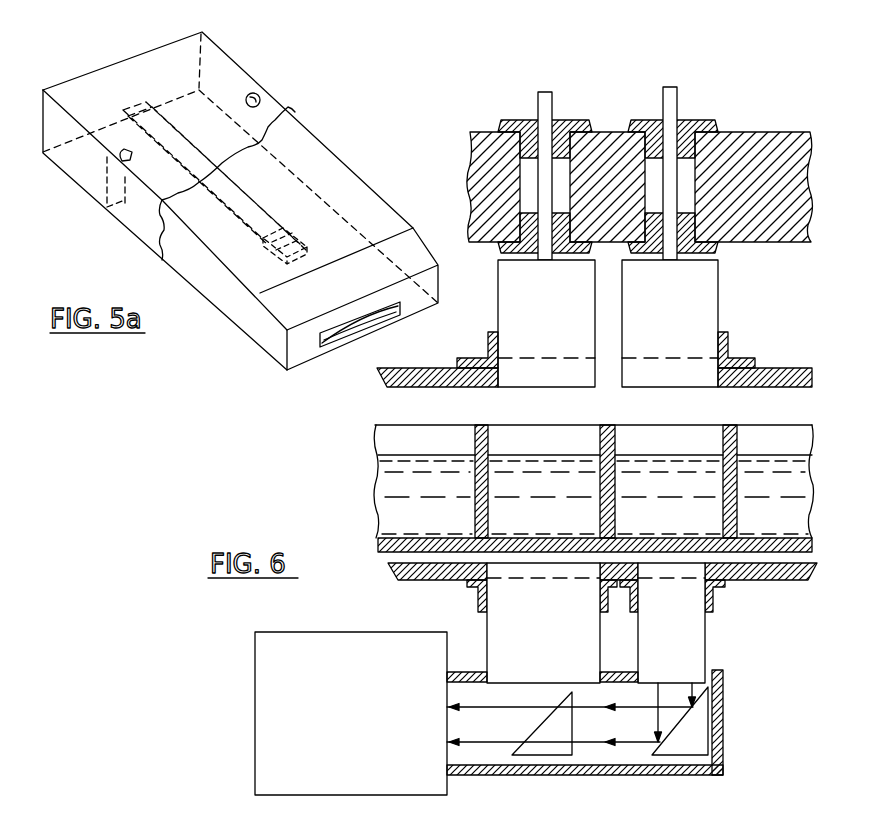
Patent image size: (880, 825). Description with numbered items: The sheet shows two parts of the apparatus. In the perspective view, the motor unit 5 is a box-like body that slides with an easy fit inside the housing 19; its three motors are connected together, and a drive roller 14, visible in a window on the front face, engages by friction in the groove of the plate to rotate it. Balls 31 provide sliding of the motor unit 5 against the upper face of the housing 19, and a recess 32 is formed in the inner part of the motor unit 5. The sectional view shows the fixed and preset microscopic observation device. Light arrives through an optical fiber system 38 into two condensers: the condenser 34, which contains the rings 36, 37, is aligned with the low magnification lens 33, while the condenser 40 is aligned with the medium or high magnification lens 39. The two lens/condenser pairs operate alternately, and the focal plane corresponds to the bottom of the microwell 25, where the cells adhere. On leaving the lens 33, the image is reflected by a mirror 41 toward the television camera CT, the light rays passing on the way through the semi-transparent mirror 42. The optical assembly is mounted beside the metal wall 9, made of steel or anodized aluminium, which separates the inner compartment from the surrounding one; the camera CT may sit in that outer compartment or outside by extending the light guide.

In FIG. 5A, the motor unit 5 is at (268, 335).
In FIG. 5A, the drive roller 14 is at (367, 327).
In FIG. 5A, the housing 19 is at (237, 83).
In FIG. 5A, the balls 31 is at (262, 101).
In FIG. 5A, the recess 32 is at (270, 253).
In FIG. 6, the optical fiber system 38 is at (654, 100).
In FIG. 6, the condenser 40 is at (512, 298).
In FIG. 6, the condenser 34 is at (693, 293).
In FIG. 6, the ring 37 is at (687, 355).
In FIG. 6, the microwell 25 is at (705, 518).
In FIG. 6, the ring 36 is at (676, 580).
In FIG. 6, the medium or high magnification lens 39 is at (502, 620).
In FIG. 6, the low magnification lens 33 is at (687, 650).
In FIG. 6, the metal wall 9 is at (480, 775).
In FIG. 6, the semi-transparent mirror 42 is at (552, 748).
In FIG. 6, the mirror 41 is at (677, 742).
In FIG. 6, the television camera CT is at (272, 770).